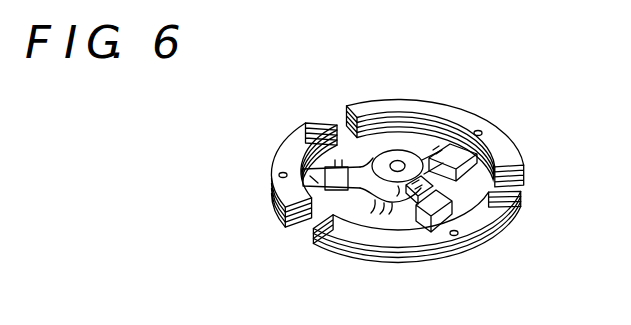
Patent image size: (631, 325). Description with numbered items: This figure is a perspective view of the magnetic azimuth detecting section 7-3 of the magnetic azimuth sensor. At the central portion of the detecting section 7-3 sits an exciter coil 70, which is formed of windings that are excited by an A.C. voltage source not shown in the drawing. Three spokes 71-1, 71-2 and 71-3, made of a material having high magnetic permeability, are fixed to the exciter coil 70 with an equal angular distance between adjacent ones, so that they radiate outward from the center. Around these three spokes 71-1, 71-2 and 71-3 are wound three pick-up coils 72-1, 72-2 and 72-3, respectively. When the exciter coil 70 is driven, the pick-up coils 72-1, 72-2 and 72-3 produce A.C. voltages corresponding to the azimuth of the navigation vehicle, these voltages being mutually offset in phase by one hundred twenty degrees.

The magnetic azimuth detecting section 7-3 is at (205, 150).
The exciter coil 70 is at (390, 203).
The spoke 71-1 is at (497, 160).
The spoke 71-2 is at (503, 216).
The spoke 71-3 is at (282, 210).
The pick-up coil 72-1 is at (441, 152).
The pick-up coil 72-2 is at (428, 233).
The pick-up coil 72-3 is at (327, 166).